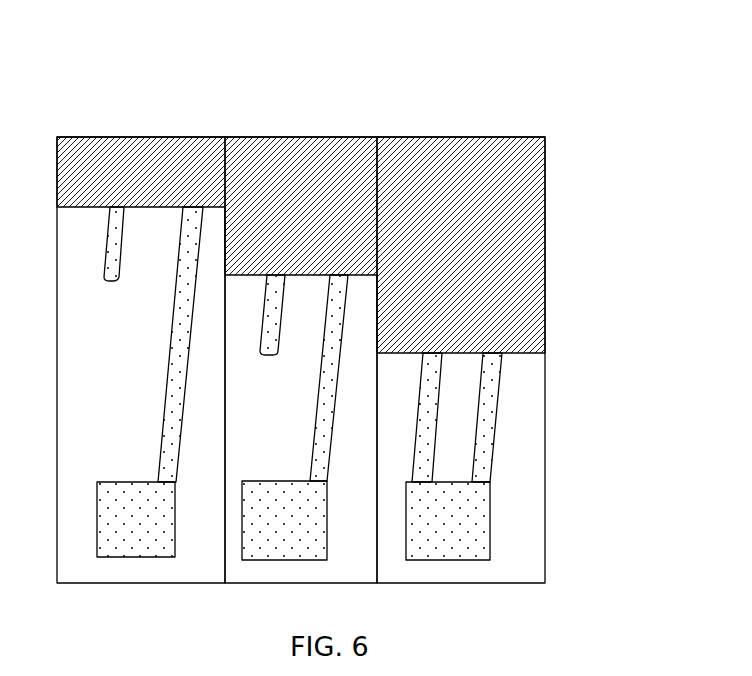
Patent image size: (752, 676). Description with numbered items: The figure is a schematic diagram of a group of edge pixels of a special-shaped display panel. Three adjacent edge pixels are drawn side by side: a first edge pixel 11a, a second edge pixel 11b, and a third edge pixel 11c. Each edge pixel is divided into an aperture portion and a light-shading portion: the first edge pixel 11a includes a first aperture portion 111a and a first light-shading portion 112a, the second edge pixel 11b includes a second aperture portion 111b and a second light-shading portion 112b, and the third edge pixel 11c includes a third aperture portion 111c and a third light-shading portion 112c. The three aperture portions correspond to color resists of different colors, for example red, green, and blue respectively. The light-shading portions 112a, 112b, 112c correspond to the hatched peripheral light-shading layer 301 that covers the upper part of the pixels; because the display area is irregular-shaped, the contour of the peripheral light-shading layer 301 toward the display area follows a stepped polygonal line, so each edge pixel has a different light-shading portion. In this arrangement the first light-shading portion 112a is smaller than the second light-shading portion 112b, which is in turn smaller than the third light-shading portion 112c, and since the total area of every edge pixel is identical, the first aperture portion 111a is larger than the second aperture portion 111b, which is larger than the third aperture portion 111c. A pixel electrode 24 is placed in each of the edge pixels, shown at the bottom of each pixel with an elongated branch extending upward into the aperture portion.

The first edge pixel 11a is at (58, 70).
The second edge pixel 11b is at (243, 70).
The third edge pixel 11c is at (418, 70).
The first aperture portion 111a is at (130, 323).
The first light-shading portion 112a is at (103, 185).
The second aperture portion 111b is at (298, 400).
The second light-shading portion 112b is at (283, 183).
The third aperture portion 111c is at (462, 440).
The third light-shading portion 112c is at (452, 183).
The peripheral light-shading layer 301 is at (497, 315).
The pixel electrode 24 is at (470, 510).